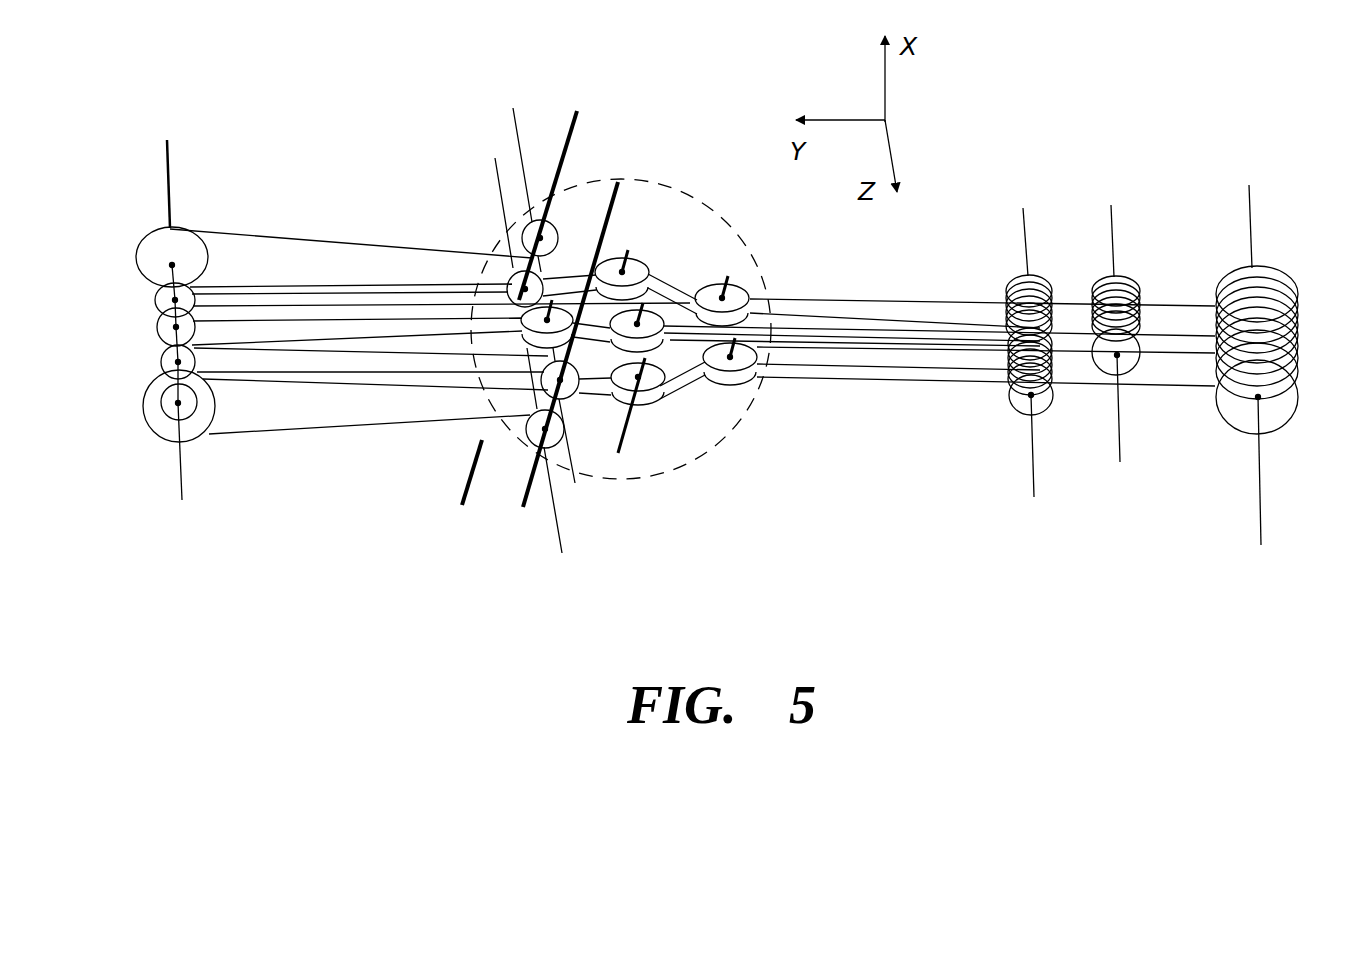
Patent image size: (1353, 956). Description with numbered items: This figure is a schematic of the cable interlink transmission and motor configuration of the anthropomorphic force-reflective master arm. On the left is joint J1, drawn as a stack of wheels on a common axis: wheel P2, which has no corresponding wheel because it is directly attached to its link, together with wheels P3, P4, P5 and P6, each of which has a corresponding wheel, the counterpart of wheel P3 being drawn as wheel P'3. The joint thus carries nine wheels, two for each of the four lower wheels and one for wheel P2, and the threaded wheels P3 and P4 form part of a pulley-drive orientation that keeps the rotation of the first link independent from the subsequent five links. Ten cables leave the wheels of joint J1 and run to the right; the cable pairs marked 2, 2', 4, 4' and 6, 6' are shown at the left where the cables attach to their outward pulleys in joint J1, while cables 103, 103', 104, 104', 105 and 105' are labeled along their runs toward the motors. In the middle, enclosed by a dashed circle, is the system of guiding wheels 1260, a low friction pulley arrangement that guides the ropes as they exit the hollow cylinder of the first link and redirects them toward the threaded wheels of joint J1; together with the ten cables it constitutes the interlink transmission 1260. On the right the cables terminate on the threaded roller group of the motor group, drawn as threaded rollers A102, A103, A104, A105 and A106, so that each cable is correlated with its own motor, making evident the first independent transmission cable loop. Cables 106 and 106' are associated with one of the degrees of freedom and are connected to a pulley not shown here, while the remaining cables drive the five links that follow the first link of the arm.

The joint J1 is at (186, 200).
The wheel P2 is at (128, 240).
The threaded wheel P3 is at (135, 397).
The corresponding wheel P'3 is at (136, 436).
The threaded wheel P4 is at (143, 323).
The wheel P5 is at (143, 360).
The wheel P6 is at (143, 302).
The cable 2 is at (351, 198).
The cable 2' is at (351, 232).
The cable 4 is at (357, 224).
The cable 4' is at (357, 249).
The cable 6 is at (350, 215).
The cable 6' is at (441, 227).
The cable 103 is at (375, 433).
The cable 103' is at (369, 466).
The cable 104 is at (939, 285).
The cable 104' is at (879, 275).
The cable 105 is at (716, 469).
The cable 105' is at (706, 465).
The cable 106 is at (982, 256).
The cable 106' is at (968, 244).
The system of guiding wheels 1260 is at (648, 178).
The threaded roller A102 is at (998, 239).
The threaded roller A103 is at (1022, 452).
The threaded roller A104 is at (1124, 363).
The threaded roller A105 is at (1281, 443).
The threaded roller A106 is at (1254, 235).